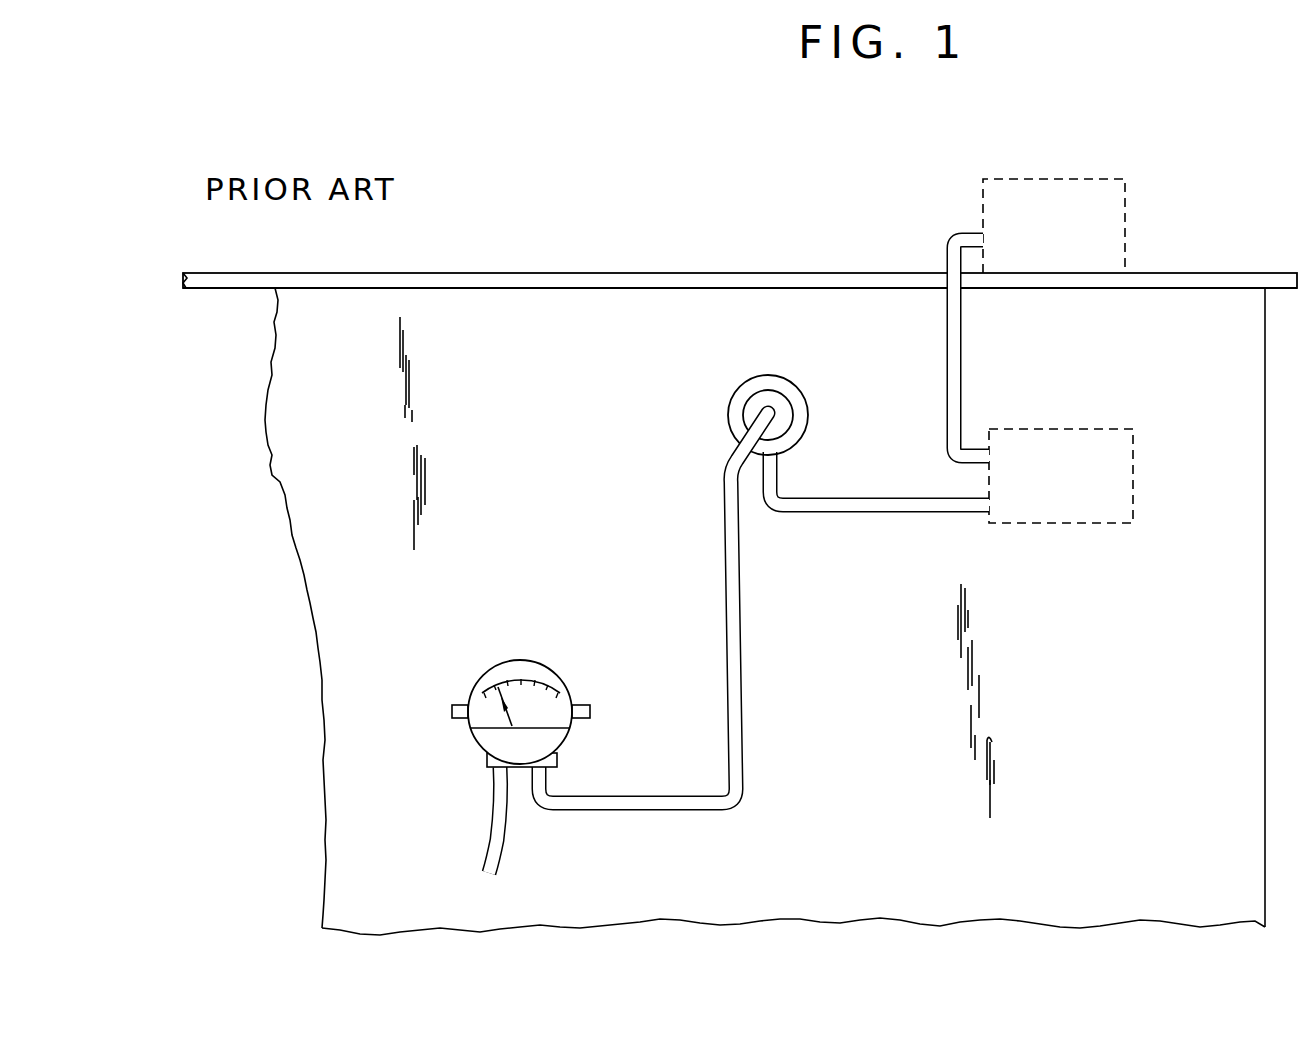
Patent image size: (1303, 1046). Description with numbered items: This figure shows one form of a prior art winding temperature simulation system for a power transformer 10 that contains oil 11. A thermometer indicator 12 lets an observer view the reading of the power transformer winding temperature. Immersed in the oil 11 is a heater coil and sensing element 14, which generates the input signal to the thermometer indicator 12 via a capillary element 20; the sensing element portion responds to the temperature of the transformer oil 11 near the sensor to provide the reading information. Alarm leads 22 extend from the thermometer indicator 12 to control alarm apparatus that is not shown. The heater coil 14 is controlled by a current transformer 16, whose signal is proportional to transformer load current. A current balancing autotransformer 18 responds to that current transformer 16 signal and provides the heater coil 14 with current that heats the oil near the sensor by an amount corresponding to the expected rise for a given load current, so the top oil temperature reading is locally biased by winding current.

The power transformer 10 is at (740, 257).
The oil 11 is at (832, 303).
The thermometer indicator 12 is at (472, 670).
The heater coil and sensing element 14 is at (735, 412).
The current transformer 16 is at (1126, 207).
The current balancing autotransformer 18 is at (1133, 460).
The capillary element 20 is at (691, 608).
The alarm leads 22 is at (487, 840).